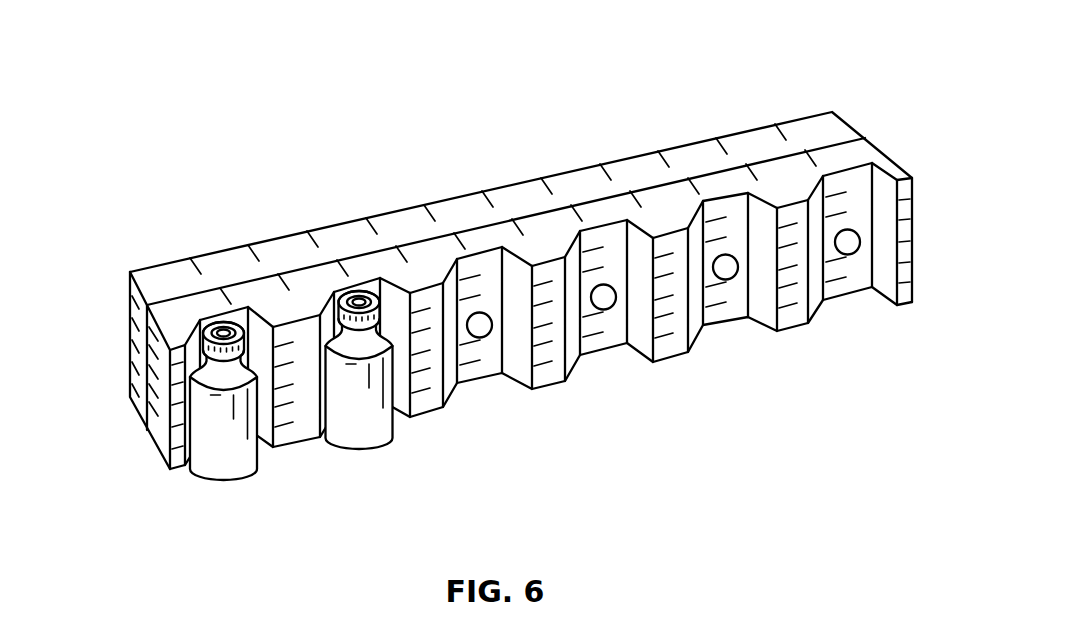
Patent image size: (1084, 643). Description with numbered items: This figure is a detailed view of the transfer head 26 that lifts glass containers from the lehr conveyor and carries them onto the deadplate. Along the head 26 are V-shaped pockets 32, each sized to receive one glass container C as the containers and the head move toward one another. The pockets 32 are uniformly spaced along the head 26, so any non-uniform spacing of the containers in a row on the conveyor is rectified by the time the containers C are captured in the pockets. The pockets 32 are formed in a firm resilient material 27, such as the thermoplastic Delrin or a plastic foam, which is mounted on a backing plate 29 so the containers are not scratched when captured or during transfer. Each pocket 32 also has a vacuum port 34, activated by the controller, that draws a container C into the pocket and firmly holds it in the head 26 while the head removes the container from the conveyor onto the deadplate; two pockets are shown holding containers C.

The transfer head 26 is at (475, 260).
The firm resilient material 27 is at (823, 162).
The backing plate 29 is at (140, 328).
The V-shaped pockets 32 is at (490, 377).
The vacuum port 34 is at (663, 321).
The glass container C is at (235, 448).